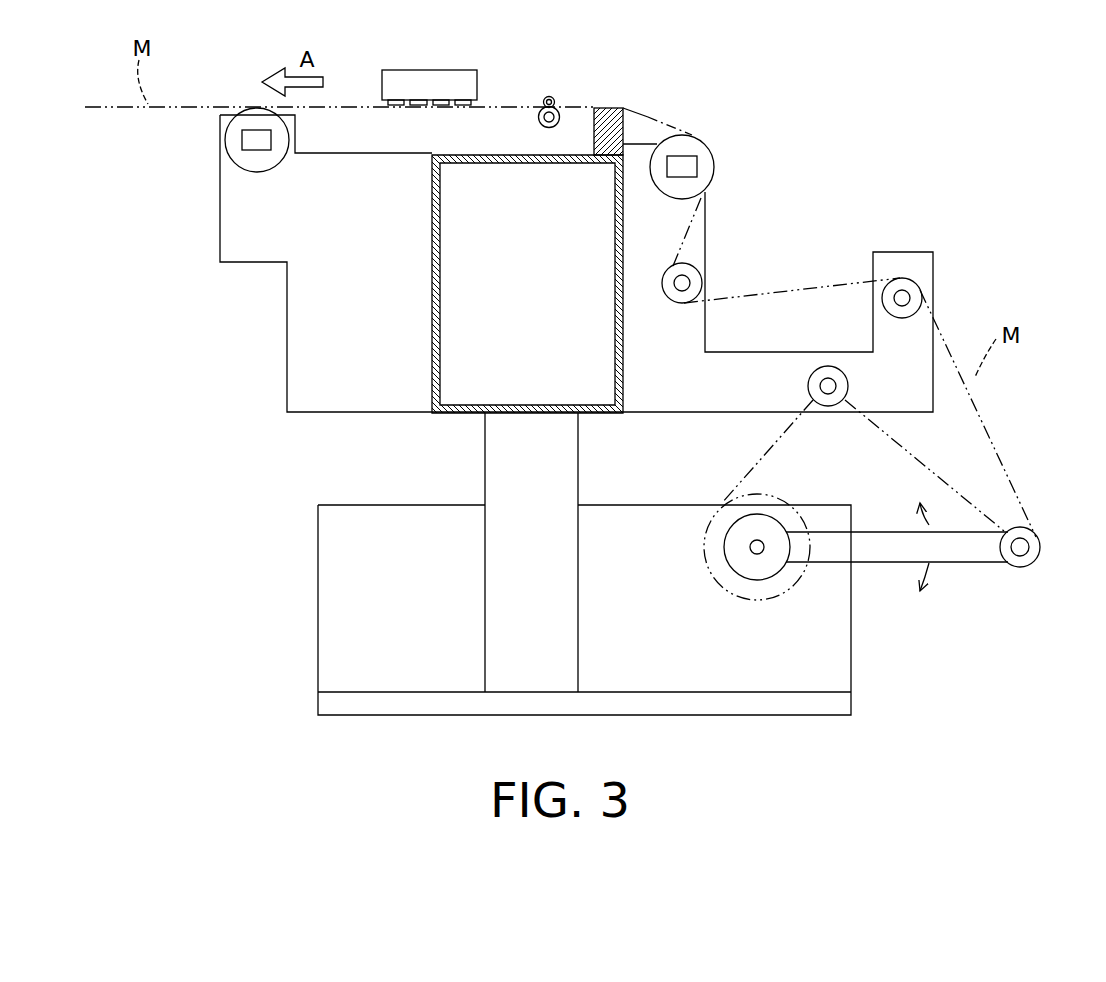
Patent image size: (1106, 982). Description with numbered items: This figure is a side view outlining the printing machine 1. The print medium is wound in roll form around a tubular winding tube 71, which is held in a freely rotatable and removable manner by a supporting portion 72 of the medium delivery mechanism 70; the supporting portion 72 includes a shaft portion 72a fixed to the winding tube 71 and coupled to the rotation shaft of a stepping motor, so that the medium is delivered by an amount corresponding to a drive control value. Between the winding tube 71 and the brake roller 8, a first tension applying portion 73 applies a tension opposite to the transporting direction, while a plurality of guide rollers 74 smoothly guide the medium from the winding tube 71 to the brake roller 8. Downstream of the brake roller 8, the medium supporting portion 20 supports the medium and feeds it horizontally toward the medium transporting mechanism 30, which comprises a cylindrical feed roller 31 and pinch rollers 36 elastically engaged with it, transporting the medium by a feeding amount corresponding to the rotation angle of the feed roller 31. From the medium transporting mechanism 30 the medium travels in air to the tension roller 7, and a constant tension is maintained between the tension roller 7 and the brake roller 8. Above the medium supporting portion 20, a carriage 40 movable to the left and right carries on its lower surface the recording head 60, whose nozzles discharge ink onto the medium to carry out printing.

The printing machine 1 is at (853, 152).
The tension roller 7 is at (247, 125).
The brake roller 8 is at (683, 142).
The medium supporting portion 20 is at (608, 118).
The medium transporting mechanism 30 is at (612, 37).
The feed roller 31 is at (566, 112).
The pinch rollers 36 is at (549, 95).
The carriage 40 is at (382, 88).
The recording head 60 is at (461, 97).
The medium delivery mechanism 70 is at (1006, 382).
The winding tube 71 is at (778, 565).
The supporting portion 72 is at (858, 665).
The shaft portion 72a is at (758, 552).
The first tension applying portion 73 is at (1030, 578).
The guide rollers 74 is at (697, 279).